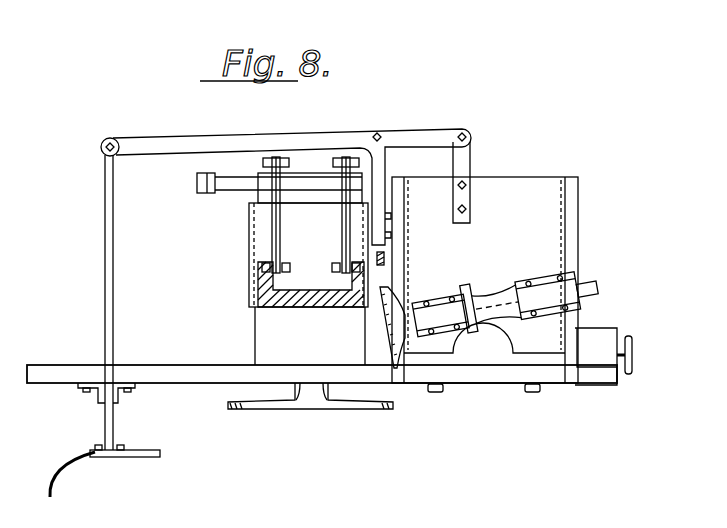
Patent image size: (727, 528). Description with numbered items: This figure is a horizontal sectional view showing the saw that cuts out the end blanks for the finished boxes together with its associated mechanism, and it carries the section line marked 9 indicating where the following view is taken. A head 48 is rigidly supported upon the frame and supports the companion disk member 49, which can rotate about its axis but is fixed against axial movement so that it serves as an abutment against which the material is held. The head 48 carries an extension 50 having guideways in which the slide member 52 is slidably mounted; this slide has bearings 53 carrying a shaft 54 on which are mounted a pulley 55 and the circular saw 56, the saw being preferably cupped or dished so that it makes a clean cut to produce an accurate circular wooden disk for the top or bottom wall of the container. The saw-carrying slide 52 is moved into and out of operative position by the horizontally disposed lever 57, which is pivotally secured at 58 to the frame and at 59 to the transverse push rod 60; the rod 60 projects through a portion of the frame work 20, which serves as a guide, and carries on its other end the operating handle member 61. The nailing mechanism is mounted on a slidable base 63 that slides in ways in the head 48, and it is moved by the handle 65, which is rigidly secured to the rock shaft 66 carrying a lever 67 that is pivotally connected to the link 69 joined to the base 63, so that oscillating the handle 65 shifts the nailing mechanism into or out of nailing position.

The frame work 20 is at (150, 365).
The head 48 is at (255, 258).
The companion disk member 49 is at (266, 409).
The extension 50 is at (580, 238).
The slide member 52 is at (534, 192).
The bearings 53 is at (452, 330).
The shaft 54 is at (597, 290).
The pulley 55 is at (498, 302).
The circular saw 56 is at (394, 300).
The lever 57 is at (356, 136).
The pivot 58 is at (383, 134).
The pivot 59 is at (113, 139).
The transverse push rod 60 is at (105, 232).
The operating handle member 61 is at (65, 476).
The slidable base 63 is at (292, 306).
The handle 65 is at (197, 183).
The rock shaft 66 is at (254, 176).
The lever 67 is at (344, 156).
The link 69 is at (272, 222).
The section line 9 is at (307, 196).